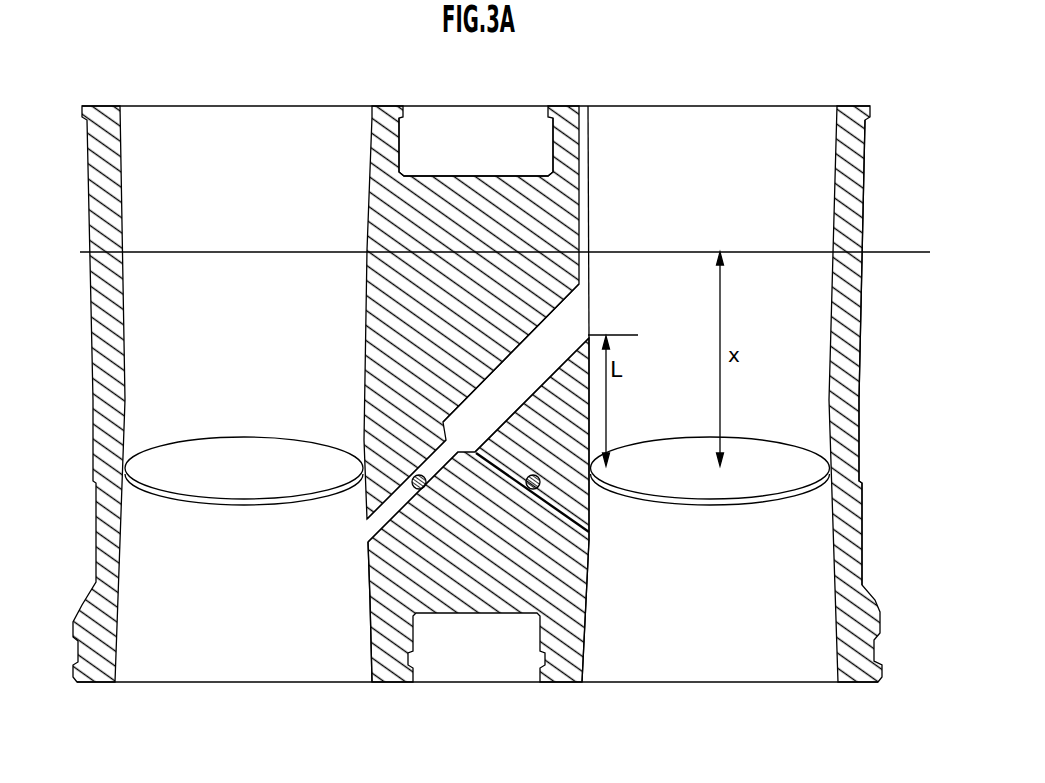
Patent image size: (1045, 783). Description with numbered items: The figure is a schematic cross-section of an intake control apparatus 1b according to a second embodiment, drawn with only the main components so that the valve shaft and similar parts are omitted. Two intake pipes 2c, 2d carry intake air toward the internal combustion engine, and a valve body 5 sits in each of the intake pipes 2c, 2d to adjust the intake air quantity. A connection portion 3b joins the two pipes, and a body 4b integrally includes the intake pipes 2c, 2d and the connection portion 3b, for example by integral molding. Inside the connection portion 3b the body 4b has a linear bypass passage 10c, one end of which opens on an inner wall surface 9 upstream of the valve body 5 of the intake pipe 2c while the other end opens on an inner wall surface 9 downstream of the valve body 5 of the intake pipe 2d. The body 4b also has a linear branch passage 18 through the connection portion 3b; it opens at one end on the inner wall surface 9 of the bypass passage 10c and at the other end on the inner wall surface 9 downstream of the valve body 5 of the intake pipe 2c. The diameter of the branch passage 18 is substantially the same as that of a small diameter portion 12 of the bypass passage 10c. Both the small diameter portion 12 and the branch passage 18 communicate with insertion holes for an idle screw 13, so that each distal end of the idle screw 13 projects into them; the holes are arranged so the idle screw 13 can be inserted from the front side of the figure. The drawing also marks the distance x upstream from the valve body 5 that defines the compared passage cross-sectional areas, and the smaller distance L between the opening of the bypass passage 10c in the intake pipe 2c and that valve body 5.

The intake control apparatus 1b is at (99, 77).
The intake pipe 2c is at (851, 106).
The intake pipe 2d is at (389, 105).
The connection portion 3b is at (498, 174).
The body 4b is at (876, 321).
The valve body 5 is at (230, 455).
The inner wall surface 9 is at (368, 563).
The bypass passage 10c is at (505, 374).
The small diameter portion 12 is at (386, 518).
The idle screw 13 is at (533, 490).
The branch passage 18 is at (563, 507).